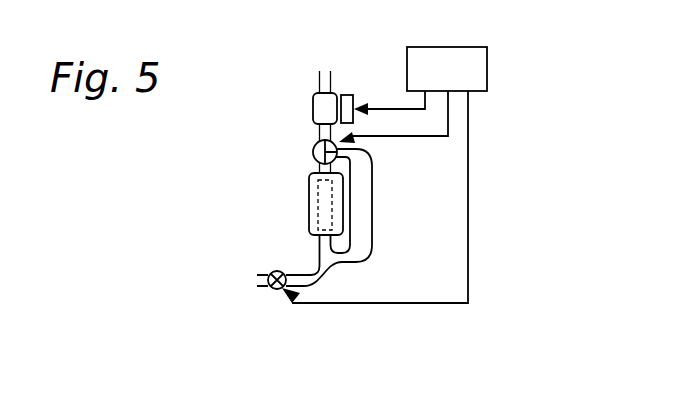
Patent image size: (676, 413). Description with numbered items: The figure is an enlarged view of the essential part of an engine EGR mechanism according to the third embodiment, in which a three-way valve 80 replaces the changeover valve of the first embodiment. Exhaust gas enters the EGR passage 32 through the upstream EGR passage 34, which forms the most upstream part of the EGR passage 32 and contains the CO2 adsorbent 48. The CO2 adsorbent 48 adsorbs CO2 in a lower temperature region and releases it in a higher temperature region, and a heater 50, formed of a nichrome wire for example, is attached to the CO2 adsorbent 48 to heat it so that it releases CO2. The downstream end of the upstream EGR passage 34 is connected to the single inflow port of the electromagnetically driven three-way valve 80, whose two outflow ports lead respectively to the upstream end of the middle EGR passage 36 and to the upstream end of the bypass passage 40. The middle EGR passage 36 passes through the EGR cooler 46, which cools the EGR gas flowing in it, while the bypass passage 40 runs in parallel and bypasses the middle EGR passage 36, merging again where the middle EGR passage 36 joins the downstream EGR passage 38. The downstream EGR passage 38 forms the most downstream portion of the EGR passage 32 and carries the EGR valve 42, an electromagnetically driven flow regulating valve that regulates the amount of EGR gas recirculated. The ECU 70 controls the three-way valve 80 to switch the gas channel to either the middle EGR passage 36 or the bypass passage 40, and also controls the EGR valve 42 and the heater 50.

The upstream EGR passage 34 is at (318, 77).
The CO2 adsorbent 48 is at (312, 108).
The heater 50 is at (347, 94).
The ECU 70 is at (490, 72).
The three-way valve 80 is at (313, 152).
The EGR cooler 46 is at (309, 188).
The middle EGR passage 36 is at (309, 211).
The bypass passage 40 is at (374, 190).
The EGR passage 32 is at (386, 258).
The downstream EGR passage 38 is at (292, 272).
The EGR valve 42 is at (277, 290).